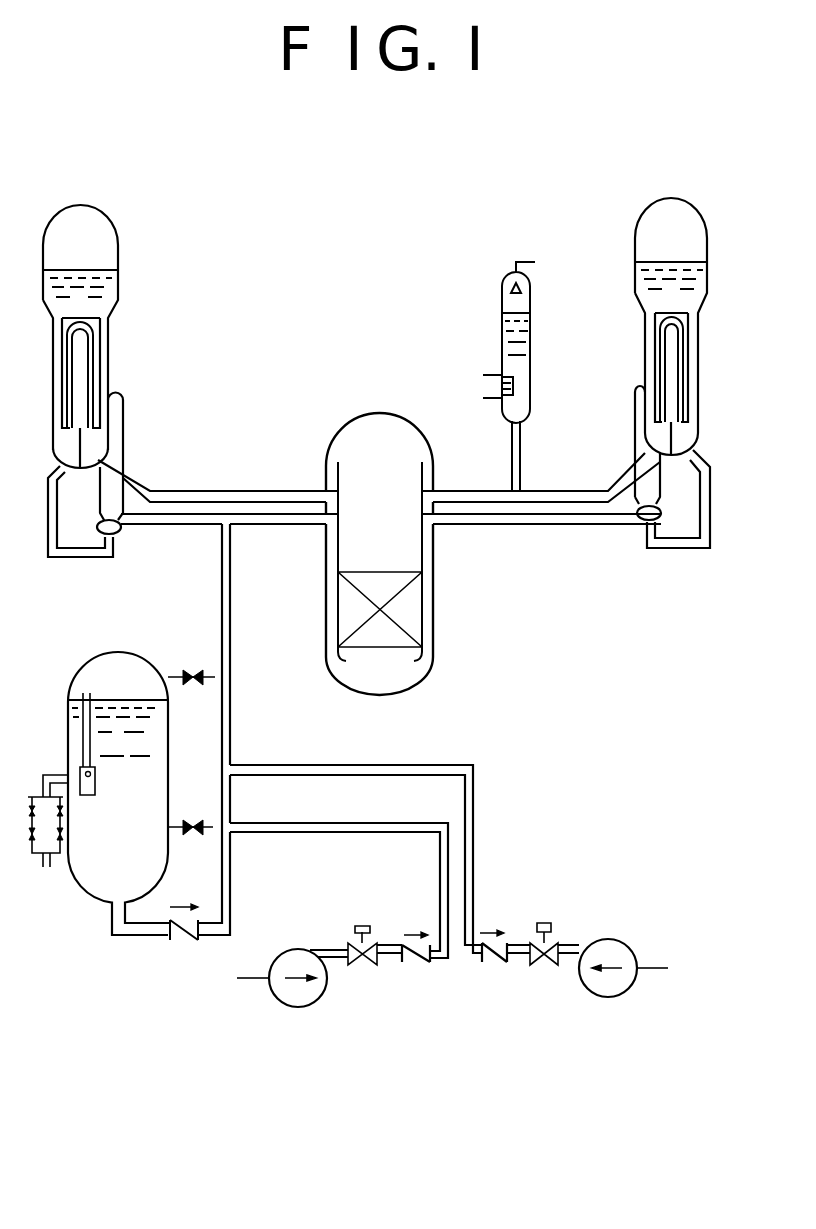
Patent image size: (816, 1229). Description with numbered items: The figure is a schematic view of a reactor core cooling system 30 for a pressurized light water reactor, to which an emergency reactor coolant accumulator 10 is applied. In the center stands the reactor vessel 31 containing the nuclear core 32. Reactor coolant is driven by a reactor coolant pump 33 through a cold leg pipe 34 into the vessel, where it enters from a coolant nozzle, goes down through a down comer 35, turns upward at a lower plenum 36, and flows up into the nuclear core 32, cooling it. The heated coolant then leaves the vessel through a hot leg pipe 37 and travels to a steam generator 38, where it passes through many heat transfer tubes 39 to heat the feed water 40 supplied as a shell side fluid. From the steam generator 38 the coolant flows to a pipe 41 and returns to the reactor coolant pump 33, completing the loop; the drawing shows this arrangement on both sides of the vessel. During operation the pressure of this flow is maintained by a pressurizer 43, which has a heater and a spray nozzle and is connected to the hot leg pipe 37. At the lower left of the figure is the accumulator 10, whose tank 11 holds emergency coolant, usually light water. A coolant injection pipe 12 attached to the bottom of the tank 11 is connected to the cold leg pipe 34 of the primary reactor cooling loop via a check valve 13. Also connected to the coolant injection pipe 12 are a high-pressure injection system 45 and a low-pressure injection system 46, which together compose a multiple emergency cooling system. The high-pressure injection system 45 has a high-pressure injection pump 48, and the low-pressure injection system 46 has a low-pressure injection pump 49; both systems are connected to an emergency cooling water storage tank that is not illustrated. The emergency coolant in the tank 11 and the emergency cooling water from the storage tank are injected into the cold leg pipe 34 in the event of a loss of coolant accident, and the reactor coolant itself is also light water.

The emergency reactor coolant accumulator 10 is at (90, 660).
The tank 11 is at (68, 722).
The coolant injection pipe 12 is at (232, 886).
The check valve 13 is at (183, 942).
The reactor core cooling system 30 is at (380, 325).
The reactor vessel 31 is at (385, 413).
The nuclear core 32 is at (420, 622).
The reactor coolant pump 33 is at (125, 425).
The cold leg pipe 34 is at (163, 530).
The down comer 35 is at (330, 615).
The lower plenum 36 is at (393, 680).
The hot leg pipe 37 is at (258, 490).
The steam generator 38 is at (112, 310).
The heat transfer tubes 39 is at (95, 350).
The feed water 40 is at (105, 280).
The pipe 41 is at (48, 535).
The pressurizer 43 is at (530, 294).
The high-pressure injection system 45 is at (478, 820).
The low-pressure injection system 46 is at (378, 838).
The high-pressure injection pump 48 is at (612, 997).
The low-pressure injection pump 49 is at (300, 1007).